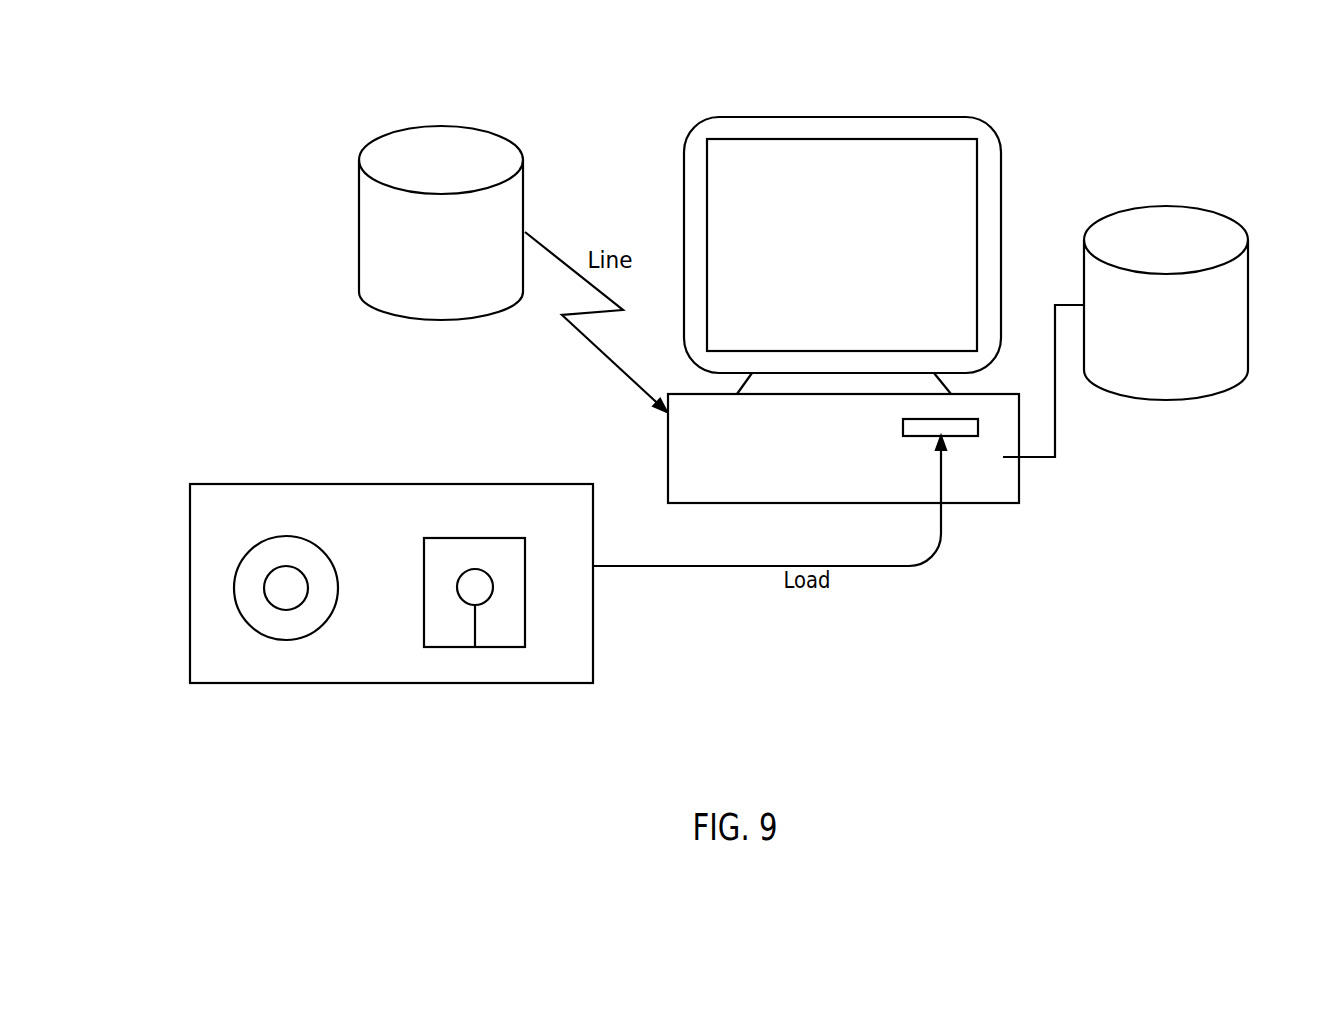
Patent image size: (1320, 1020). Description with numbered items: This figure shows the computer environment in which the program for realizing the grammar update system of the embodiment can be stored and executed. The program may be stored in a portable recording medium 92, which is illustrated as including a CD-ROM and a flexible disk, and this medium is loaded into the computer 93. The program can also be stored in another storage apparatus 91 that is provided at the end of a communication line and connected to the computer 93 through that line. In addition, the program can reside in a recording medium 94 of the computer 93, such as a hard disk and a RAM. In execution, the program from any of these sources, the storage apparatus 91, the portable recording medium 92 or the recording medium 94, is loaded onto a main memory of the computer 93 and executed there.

The storage apparatus 91 is at (492, 138).
The portable recording medium 92 is at (362, 484).
The computer 93 is at (841, 117).
The recording medium 94 is at (1217, 215).